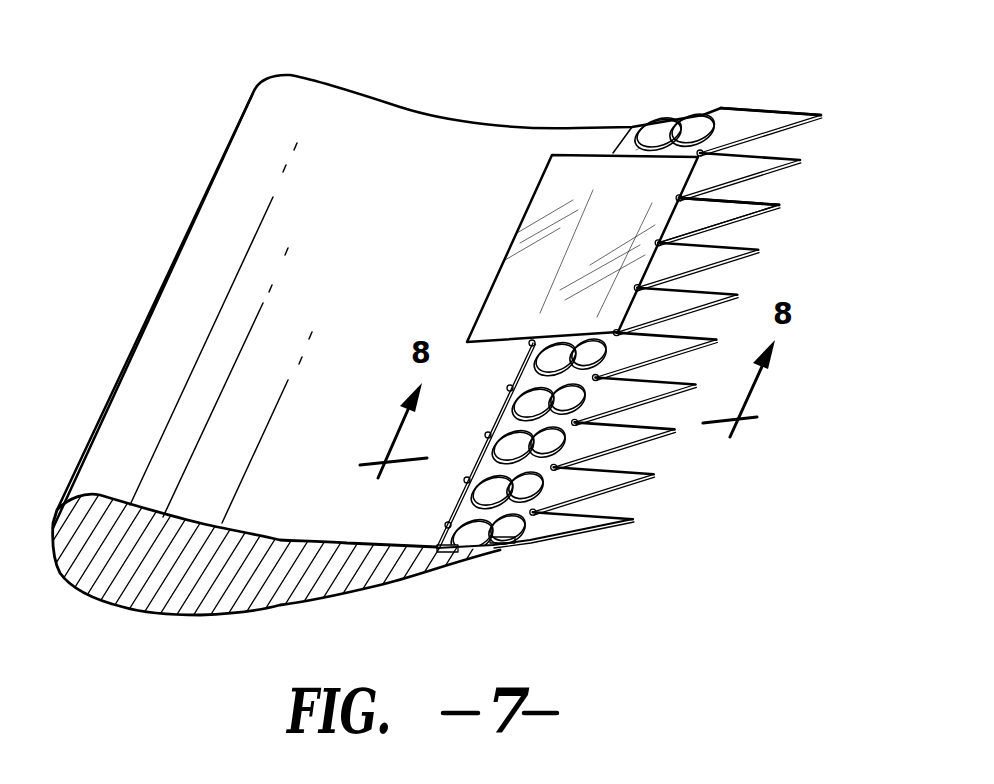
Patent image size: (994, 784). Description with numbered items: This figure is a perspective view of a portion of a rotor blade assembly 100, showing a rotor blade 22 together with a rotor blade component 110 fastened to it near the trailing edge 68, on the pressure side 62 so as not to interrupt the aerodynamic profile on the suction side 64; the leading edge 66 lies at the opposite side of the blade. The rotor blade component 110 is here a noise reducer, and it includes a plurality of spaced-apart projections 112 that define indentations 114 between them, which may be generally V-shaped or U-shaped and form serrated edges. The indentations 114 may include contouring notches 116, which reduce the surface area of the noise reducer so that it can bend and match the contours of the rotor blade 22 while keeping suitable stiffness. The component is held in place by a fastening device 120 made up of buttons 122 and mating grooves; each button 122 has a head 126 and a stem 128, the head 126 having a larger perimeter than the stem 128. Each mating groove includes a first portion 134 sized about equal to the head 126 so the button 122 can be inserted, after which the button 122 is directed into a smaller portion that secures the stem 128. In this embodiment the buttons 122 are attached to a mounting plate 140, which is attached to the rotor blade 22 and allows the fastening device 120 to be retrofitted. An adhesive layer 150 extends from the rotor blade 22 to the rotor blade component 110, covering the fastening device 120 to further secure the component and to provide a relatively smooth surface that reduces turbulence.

The rotor blade assembly 100 is at (184, 87).
The rotor blade 22 is at (135, 260).
The pressure side 62 is at (400, 145).
The suction side 64 is at (163, 613).
The leading edge 66 is at (107, 413).
The trailing edge 68 is at (533, 540).
The rotor blade component 110 is at (769, 100).
The projections 112 is at (823, 110).
The indentations 114 is at (770, 188).
The contouring notches 116 is at (663, 237).
The fastening device 120 is at (680, 103).
The button 122 is at (660, 132).
The first portion of mating groove 134 is at (700, 127).
The head 126 is at (480, 528).
The stem 128 is at (475, 550).
The mounting plate 140 is at (508, 547).
The adhesive layer 150 is at (603, 190).